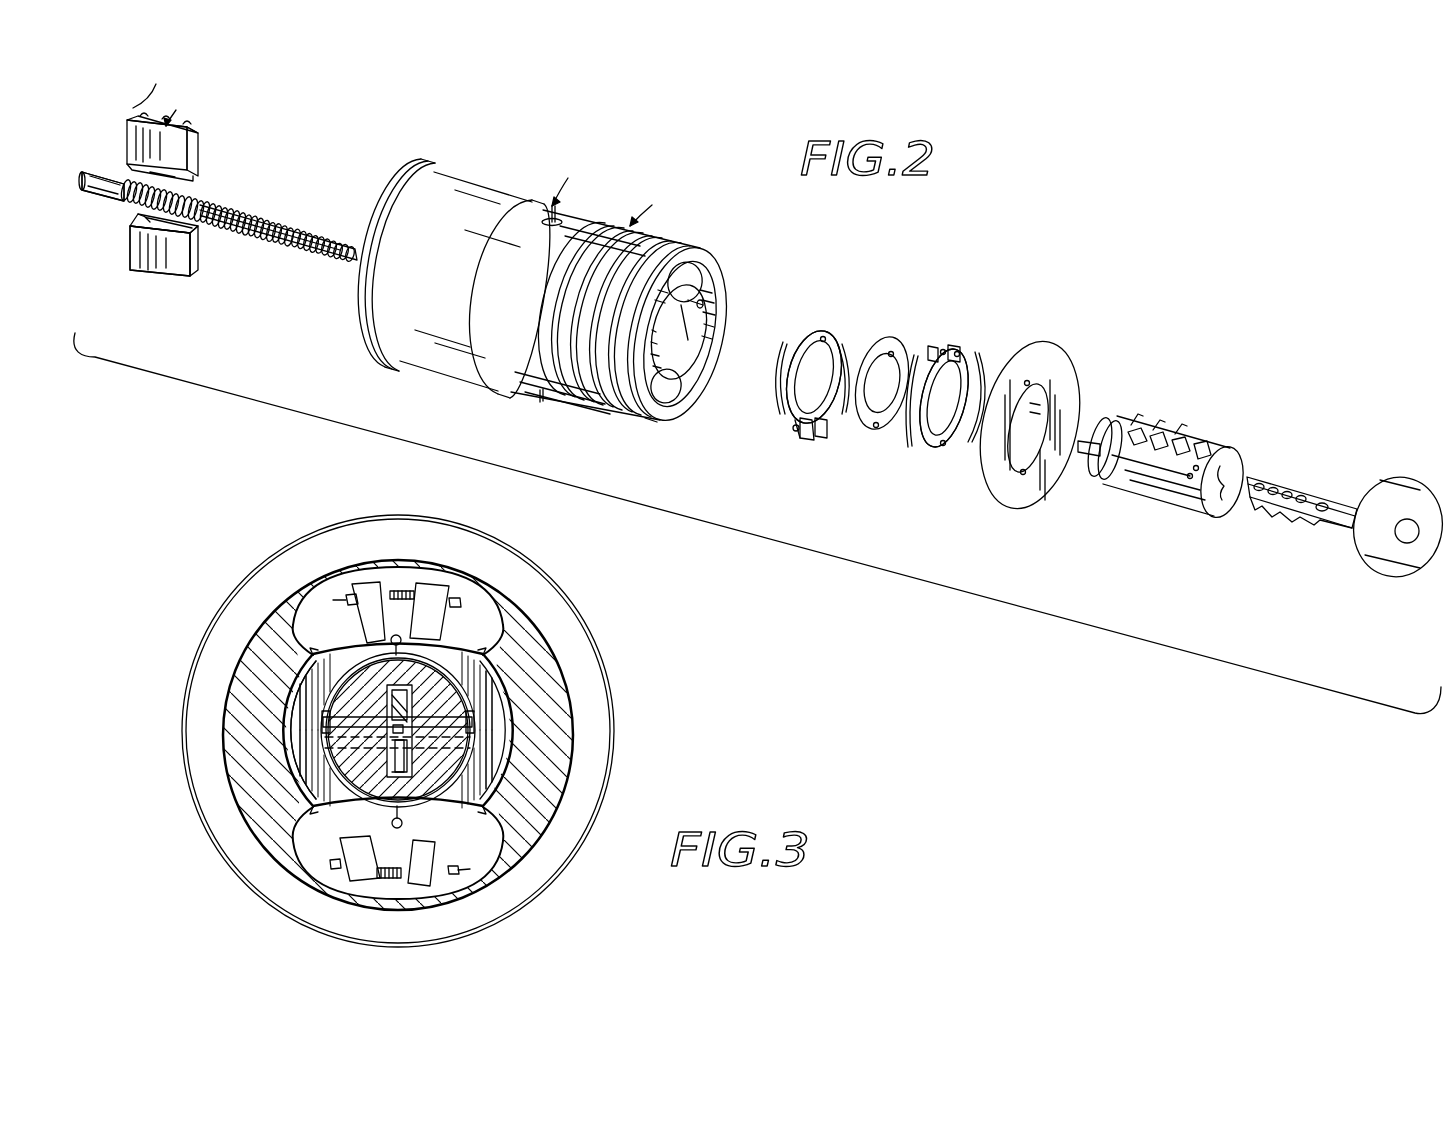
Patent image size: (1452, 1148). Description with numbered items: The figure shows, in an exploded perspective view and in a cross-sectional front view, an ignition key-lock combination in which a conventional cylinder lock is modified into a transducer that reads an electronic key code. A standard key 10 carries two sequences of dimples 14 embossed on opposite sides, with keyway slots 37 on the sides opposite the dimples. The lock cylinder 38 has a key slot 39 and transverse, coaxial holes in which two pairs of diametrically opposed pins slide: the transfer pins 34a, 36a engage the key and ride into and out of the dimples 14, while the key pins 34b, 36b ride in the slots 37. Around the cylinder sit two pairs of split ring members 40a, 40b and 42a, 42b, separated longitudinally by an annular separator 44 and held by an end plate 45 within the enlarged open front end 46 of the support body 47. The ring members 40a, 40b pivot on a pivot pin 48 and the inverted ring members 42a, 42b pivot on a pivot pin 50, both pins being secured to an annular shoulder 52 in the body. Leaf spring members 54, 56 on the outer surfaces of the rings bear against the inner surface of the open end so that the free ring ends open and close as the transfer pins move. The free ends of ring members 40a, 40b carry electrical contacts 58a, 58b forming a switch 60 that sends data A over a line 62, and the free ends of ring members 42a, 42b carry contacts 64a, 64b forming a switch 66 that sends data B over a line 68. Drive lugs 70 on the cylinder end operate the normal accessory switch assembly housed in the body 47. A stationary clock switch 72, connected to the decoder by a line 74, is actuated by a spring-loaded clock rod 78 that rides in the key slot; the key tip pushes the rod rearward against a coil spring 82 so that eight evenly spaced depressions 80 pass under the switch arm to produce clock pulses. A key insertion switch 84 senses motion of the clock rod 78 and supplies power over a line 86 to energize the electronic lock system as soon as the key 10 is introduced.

In FIG. 2, the key 10 is at (1405, 480).
In FIG. 3, the key 10 is at (418, 749).
In FIG. 2, the dimples 14 is at (1256, 478).
In FIG. 3, the dimples 14 is at (412, 690).
In FIG. 3, the transfer pin 34a is at (320, 720).
In FIG. 3, the key pin 34b is at (476, 720).
In FIG. 3, the transfer pin 36a is at (472, 740).
In FIG. 3, the key pin 36b is at (326, 748).
In FIG. 2, the slots 37 is at (1325, 520).
In FIG. 3, the slots 37 is at (405, 700).
In FIG. 2, the lock cylinder 38 is at (1152, 490).
In FIG. 3, the lock cylinder 38 is at (350, 672).
In FIG. 3, the key slot 39 is at (360, 705).
In FIG. 2, the split ring member 40a is at (935, 445).
In FIG. 3, the split ring member 40a is at (300, 701).
In FIG. 2, the split ring member 40b is at (962, 445).
In FIG. 3, the split ring member 40b is at (470, 791).
In FIG. 2, the split ring member 42a is at (832, 330).
In FIG. 2, the split ring member 42b is at (805, 338).
In FIG. 2, the annular separator 44 is at (912, 276).
In FIG. 2, the end plate 45 is at (1072, 362).
In FIG. 2, the enlarged open front end 46 is at (778, 352).
In FIG. 2, the support body 47 is at (672, 245).
In FIG. 3, the support body 47 is at (538, 572).
In FIG. 2, the pivot pin 48 is at (657, 420).
In FIG. 3, the pivot pin 48 is at (402, 824).
In FIG. 2, the pivot pin 50 is at (703, 304).
In FIG. 3, the pivot pin 50 is at (391, 643).
In FIG. 2, the annular shoulder 52 is at (688, 335).
In FIG. 2, the spring members 54 is at (1070, 222).
In FIG. 3, the spring members 54 is at (510, 668).
In FIG. 2, the spring members 56 is at (690, 462).
In FIG. 3, the electrical contact 58a is at (372, 582).
In FIG. 3, the electrical contact 58b is at (438, 584).
In FIG. 2, the switch 60 is at (939, 340).
In FIG. 3, the switch 60 is at (400, 587).
In FIG. 2, the line 62 is at (965, 345).
In FIG. 3, the electrical contact 64a is at (372, 879).
In FIG. 3, the electrical contact 64b is at (418, 887).
In FIG. 2, the switch 66 is at (802, 430).
In FIG. 3, the switch 66 is at (390, 882).
In FIG. 2, the line 68 is at (838, 425).
In FIG. 2, the drive lugs 70 is at (1082, 462).
In FIG. 2, the clock switch 72 is at (132, 130).
In FIG. 2, the line 74 is at (200, 120).
In FIG. 2, the clock rod 78 is at (192, 200).
In FIG. 2, the depressions 80 is at (125, 205).
In FIG. 2, the coil spring 82 is at (268, 236).
In FIG. 2, the key insertion switch 84 is at (140, 270).
In FIG. 2, the line 86 is at (118, 266).